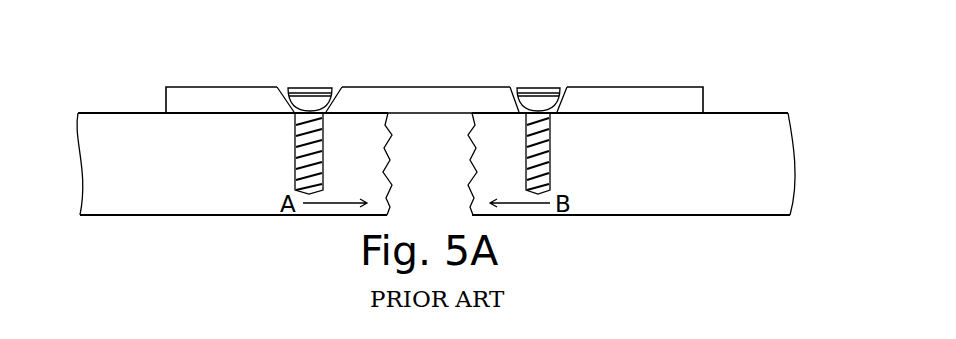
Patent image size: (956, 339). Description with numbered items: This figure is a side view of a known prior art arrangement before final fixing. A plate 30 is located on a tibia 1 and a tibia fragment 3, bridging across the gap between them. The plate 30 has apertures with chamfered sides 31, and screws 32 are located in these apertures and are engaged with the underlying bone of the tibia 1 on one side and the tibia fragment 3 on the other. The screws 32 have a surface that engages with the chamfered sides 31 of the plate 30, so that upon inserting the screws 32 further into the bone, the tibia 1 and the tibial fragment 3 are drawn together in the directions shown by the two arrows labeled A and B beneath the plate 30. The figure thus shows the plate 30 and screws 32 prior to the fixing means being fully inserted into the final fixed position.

The tibia 1 is at (150, 203).
The tibia fragment 3 is at (707, 203).
The plate 30 is at (437, 100).
The chamfered sides 31 is at (334, 87).
The screws 32 is at (307, 94).